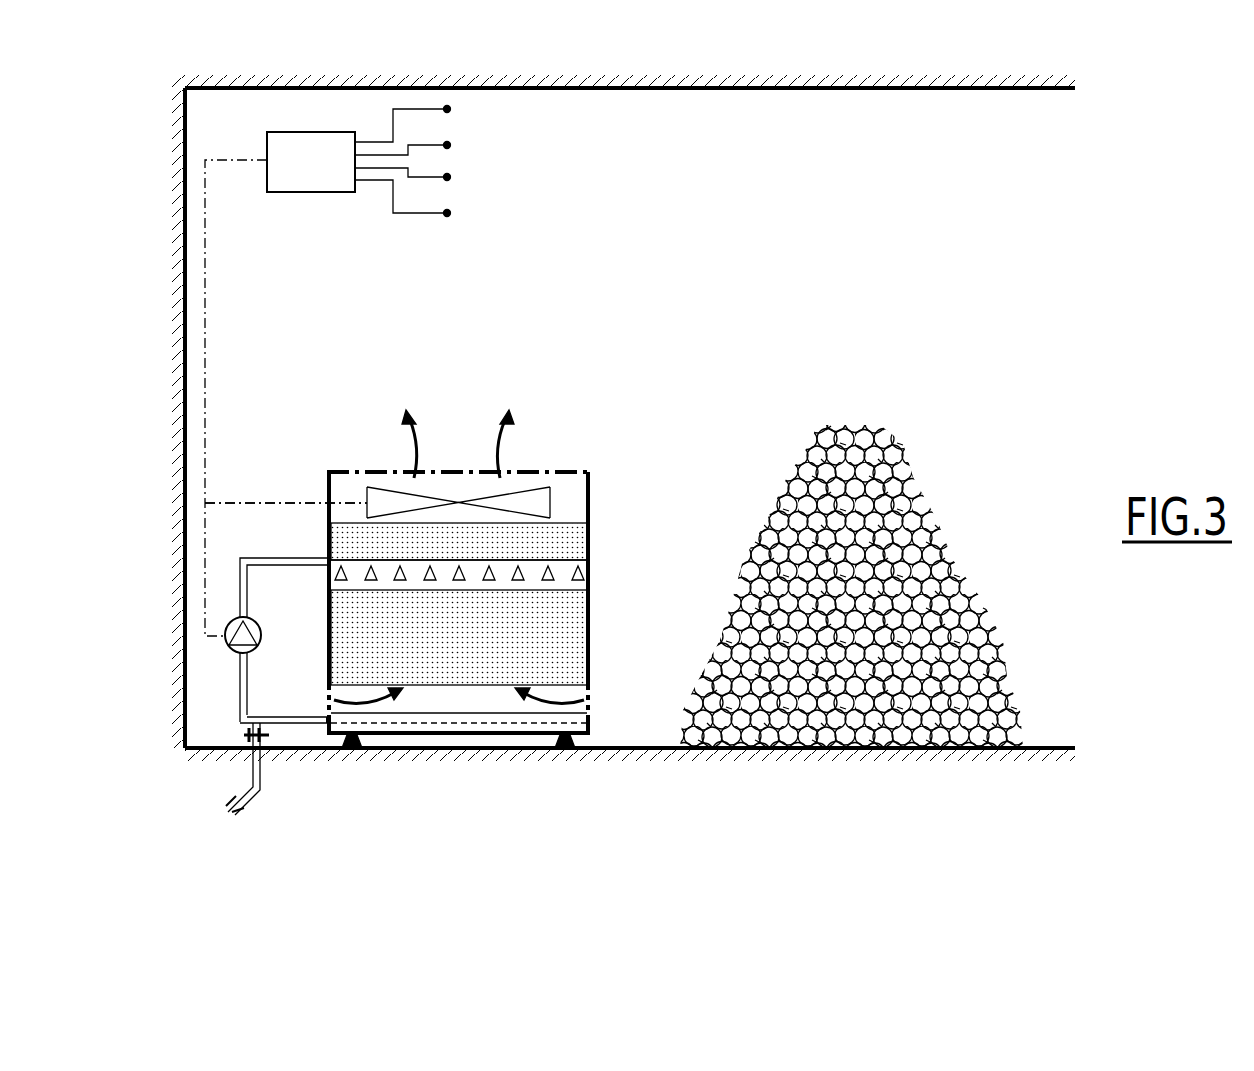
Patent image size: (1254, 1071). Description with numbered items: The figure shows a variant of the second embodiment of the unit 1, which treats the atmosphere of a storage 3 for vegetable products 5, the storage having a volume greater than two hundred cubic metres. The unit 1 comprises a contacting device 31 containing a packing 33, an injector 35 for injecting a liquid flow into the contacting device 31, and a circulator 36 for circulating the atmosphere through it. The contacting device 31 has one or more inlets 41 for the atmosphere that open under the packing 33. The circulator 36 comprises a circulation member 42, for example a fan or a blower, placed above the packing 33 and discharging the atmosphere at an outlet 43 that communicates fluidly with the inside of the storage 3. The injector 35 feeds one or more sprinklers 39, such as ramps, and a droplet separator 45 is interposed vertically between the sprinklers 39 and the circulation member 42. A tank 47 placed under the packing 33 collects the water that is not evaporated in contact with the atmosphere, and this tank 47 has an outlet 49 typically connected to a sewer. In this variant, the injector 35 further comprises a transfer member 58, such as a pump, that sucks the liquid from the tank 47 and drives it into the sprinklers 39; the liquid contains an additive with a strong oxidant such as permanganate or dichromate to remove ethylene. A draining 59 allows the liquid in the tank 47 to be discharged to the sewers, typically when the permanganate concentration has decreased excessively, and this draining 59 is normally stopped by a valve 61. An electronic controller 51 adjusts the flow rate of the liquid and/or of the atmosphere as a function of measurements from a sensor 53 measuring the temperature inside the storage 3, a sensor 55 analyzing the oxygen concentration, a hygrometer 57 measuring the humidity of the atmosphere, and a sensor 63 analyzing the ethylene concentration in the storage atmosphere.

The unit 1 is at (632, 428).
The storage 3 is at (882, 88).
The vegetable products 5 is at (970, 598).
The contacting device 31 is at (616, 578).
The packing 33 is at (575, 642).
The injector 35 is at (234, 526).
The circulator 36 is at (538, 470).
The sprinklers 39 is at (358, 560).
The inlets 41 is at (328, 698).
The circulation member 42 is at (546, 503).
The outlet 43 is at (345, 470).
The droplet separator 45 is at (574, 545).
The tank 47 is at (590, 713).
The outlet 49 is at (328, 718).
The electronic controller 51 is at (286, 384).
The sensor 53 is at (450, 109).
The sensor 55 is at (450, 145).
The hygrometer 57 is at (450, 177).
The transfer member 58 is at (260, 625).
The draining 59 is at (262, 790).
The valve 61 is at (248, 733).
The sensor 63 is at (450, 213).